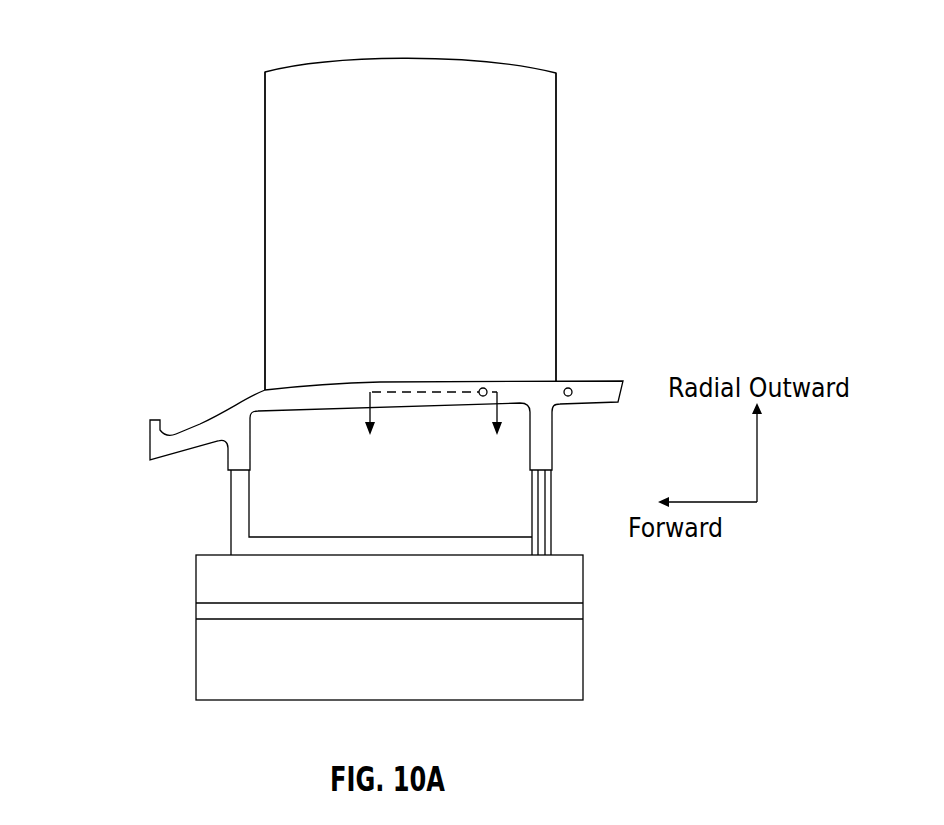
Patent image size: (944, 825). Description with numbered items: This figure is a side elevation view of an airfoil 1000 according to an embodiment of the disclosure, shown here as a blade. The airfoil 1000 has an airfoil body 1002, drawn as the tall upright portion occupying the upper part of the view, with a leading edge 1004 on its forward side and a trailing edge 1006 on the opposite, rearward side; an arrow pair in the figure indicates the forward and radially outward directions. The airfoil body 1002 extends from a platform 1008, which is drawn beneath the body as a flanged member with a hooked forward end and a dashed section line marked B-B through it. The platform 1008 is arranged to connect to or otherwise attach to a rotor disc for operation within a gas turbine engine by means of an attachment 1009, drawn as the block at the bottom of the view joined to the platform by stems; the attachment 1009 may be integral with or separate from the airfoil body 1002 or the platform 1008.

The airfoil 1000 is at (146, 73).
The airfoil body 1002 is at (292, 279).
The leading edge 1004 is at (265, 177).
The trailing edge 1006 is at (556, 231).
The platform 1008 is at (192, 420).
The attachment 1009 is at (218, 660).